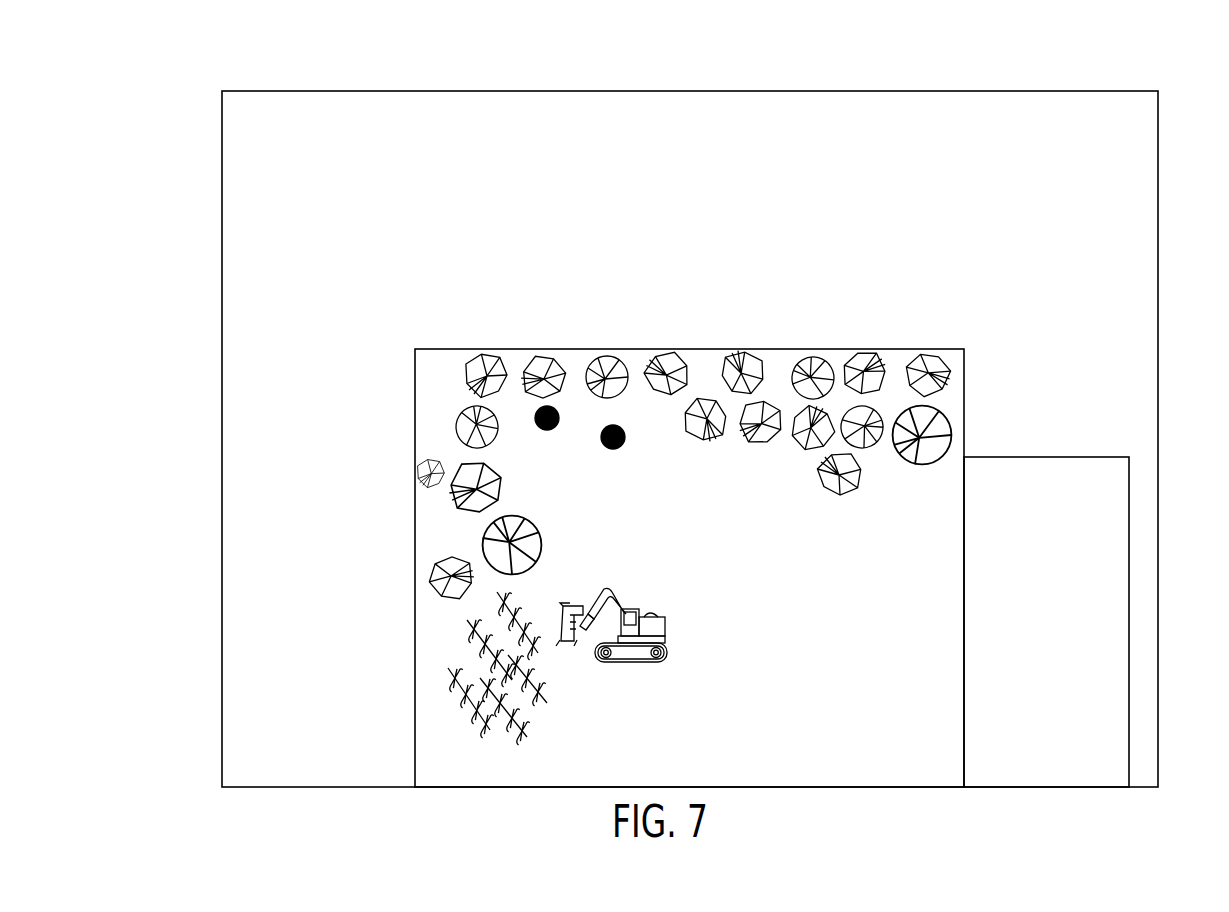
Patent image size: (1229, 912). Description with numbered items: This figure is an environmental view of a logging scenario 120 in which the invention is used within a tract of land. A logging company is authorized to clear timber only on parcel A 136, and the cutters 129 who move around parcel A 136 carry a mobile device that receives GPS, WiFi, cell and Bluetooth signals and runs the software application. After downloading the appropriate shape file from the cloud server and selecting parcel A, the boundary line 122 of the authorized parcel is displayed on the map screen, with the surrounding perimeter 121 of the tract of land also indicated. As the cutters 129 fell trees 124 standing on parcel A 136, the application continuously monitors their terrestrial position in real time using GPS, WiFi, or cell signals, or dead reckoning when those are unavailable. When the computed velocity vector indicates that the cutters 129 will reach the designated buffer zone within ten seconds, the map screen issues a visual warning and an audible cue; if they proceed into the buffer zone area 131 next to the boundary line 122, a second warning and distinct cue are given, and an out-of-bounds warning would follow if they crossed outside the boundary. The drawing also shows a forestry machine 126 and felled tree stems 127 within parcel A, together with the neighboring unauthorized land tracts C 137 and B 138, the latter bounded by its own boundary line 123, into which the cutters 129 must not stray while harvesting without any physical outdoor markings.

The logging scenario 120 is at (200, 80).
The boundary of map image 121 is at (222, 183).
The boundary line 122 is at (415, 657).
The second work region B 123 is at (1051, 457).
The trees 124 is at (445, 378).
The forestry machine 126 is at (640, 663).
The felled/stacked tree stems 127 is at (508, 727).
The cutters 129 is at (548, 431).
The buffer zone area 131 is at (510, 393).
The parcel A 136 is at (715, 563).
The unauthorized land tract C 137 is at (673, 208).
The unauthorized land tract B 138 is at (1047, 590).